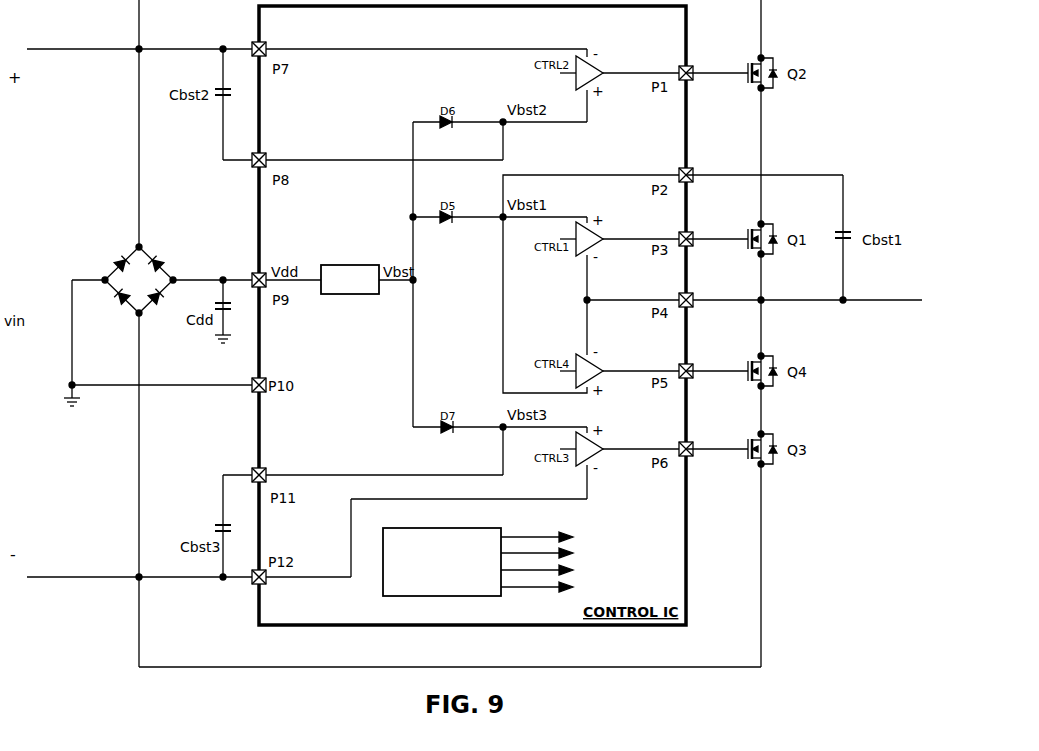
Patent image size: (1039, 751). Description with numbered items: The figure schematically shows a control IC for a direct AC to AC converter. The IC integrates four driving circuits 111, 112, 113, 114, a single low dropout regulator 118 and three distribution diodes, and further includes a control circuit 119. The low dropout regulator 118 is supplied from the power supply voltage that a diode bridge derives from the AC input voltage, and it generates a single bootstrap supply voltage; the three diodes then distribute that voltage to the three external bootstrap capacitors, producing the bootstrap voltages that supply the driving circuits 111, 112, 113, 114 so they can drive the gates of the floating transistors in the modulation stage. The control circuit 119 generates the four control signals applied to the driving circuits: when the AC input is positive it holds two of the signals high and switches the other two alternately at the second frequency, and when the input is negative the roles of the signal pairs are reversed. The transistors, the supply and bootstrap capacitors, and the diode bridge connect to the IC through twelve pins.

The driving circuit 111 is at (623, 239).
The driving circuit 112 is at (623, 73).
The driving circuit 113 is at (623, 449).
The driving circuit 114 is at (623, 371).
The LDO 118 is at (340, 294).
The control circuit 119 is at (405, 596).